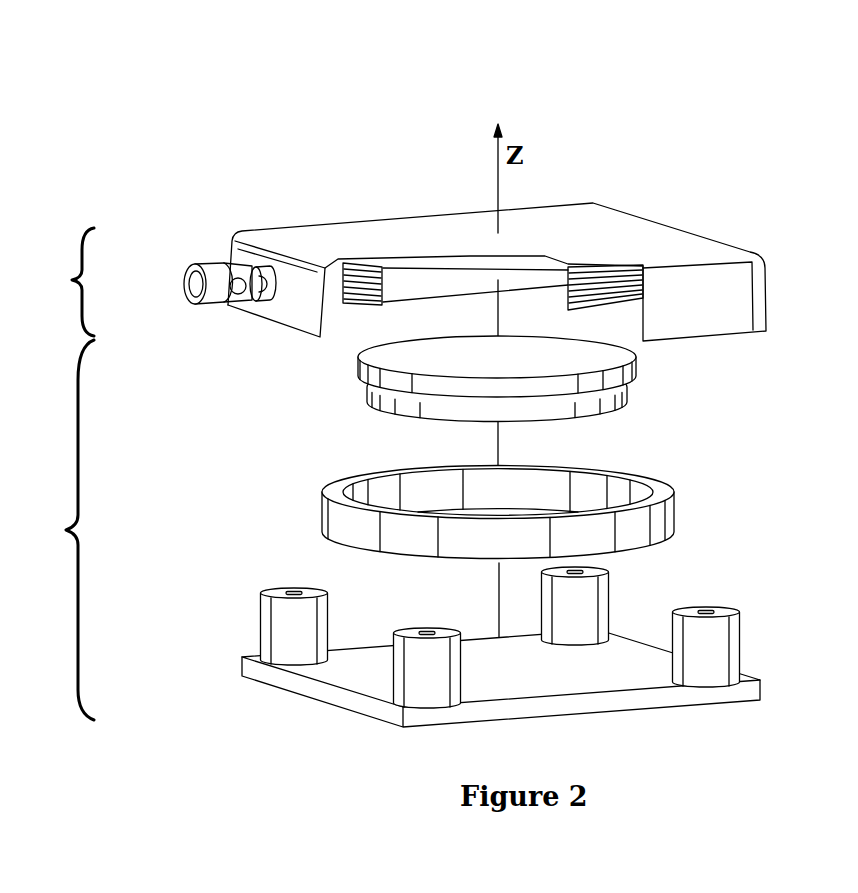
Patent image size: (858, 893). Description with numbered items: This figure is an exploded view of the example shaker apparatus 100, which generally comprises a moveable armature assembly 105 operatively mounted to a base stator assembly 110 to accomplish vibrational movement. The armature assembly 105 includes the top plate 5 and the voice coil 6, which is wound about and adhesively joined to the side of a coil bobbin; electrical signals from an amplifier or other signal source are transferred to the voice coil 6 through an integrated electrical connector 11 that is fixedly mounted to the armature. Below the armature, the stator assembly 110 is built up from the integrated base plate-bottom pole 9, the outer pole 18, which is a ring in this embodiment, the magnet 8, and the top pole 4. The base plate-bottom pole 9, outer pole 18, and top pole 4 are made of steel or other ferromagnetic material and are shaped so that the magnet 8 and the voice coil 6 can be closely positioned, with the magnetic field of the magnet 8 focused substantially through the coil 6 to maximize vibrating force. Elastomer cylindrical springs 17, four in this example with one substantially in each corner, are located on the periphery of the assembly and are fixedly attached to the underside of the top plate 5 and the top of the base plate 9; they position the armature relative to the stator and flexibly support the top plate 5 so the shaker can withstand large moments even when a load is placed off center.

The shaker apparatus 100 is at (763, 61).
The armature assembly 105 is at (63, 282).
The stator assembly 110 is at (62, 530).
The top plate 5 is at (436, 237).
The voice coil 6 is at (640, 265).
The integrated electrical connector 11 is at (213, 265).
The top pole 4 is at (425, 353).
The magnet 8 is at (588, 404).
The outer pole 18 is at (366, 530).
The integrated base plate-bottom pole 9 is at (547, 672).
The springs 17 is at (713, 647).